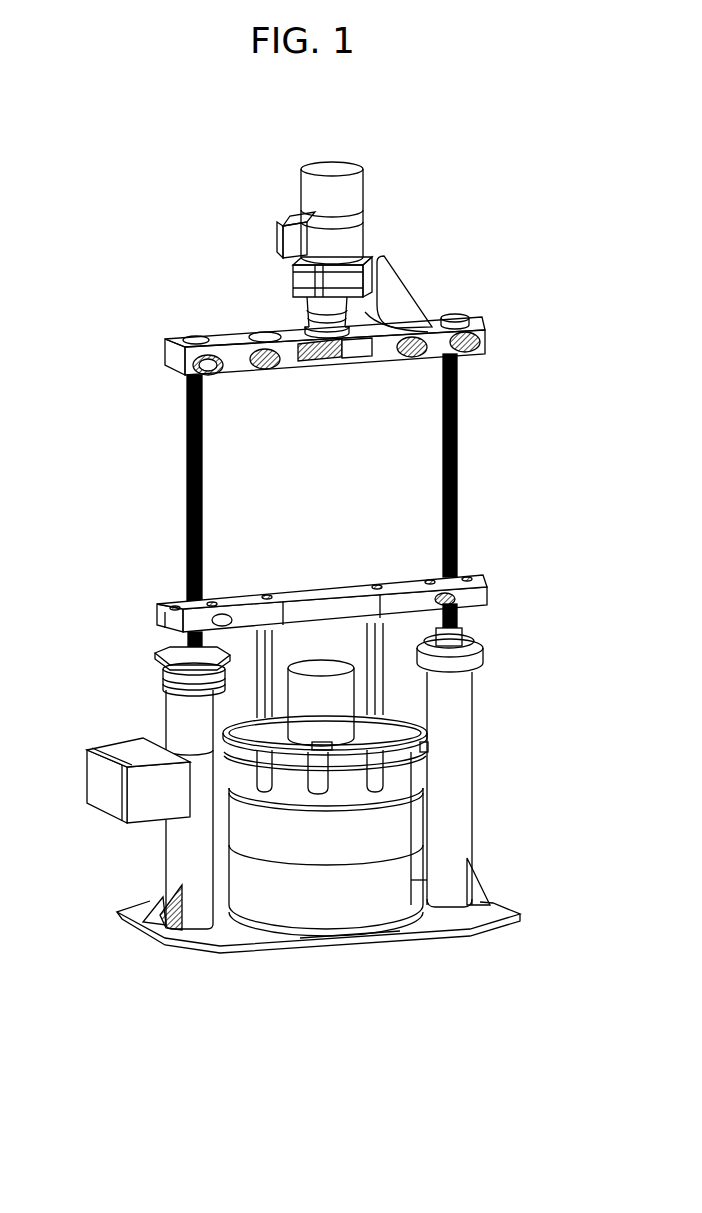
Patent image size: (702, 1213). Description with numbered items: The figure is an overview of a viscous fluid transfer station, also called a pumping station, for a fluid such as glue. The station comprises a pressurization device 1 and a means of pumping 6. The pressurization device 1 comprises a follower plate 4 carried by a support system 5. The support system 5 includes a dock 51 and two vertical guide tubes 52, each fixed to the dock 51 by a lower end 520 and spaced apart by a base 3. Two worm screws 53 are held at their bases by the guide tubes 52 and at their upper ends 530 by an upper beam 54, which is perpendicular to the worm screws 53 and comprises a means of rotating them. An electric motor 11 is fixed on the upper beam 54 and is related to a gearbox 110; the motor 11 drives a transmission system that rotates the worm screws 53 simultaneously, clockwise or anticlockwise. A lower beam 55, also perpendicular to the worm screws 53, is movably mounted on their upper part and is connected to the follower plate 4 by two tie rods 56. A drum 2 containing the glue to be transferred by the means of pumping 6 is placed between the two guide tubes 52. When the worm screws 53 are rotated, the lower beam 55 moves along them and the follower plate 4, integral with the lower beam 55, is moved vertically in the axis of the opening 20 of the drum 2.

The pressurization device 1 is at (520, 278).
The electric motor 11 is at (293, 217).
The gearbox 110 is at (398, 302).
The upper ends of the worm screws 530 is at (456, 310).
The upper beam 54 is at (498, 342).
The worm screws 53 is at (460, 424).
The support system 5 is at (158, 547).
The lower beam 55 is at (490, 590).
The tie rods 56 is at (390, 693).
The means of pumping 6 is at (338, 706).
The opening of the drum 20 is at (272, 736).
The follower plate 4 is at (365, 797).
The vertical guide tubes 52 is at (485, 828).
The drum 2 is at (272, 835).
The lower end of guide tube 520 is at (158, 915).
The base 3 is at (400, 930).
The dock 51 is at (477, 932).